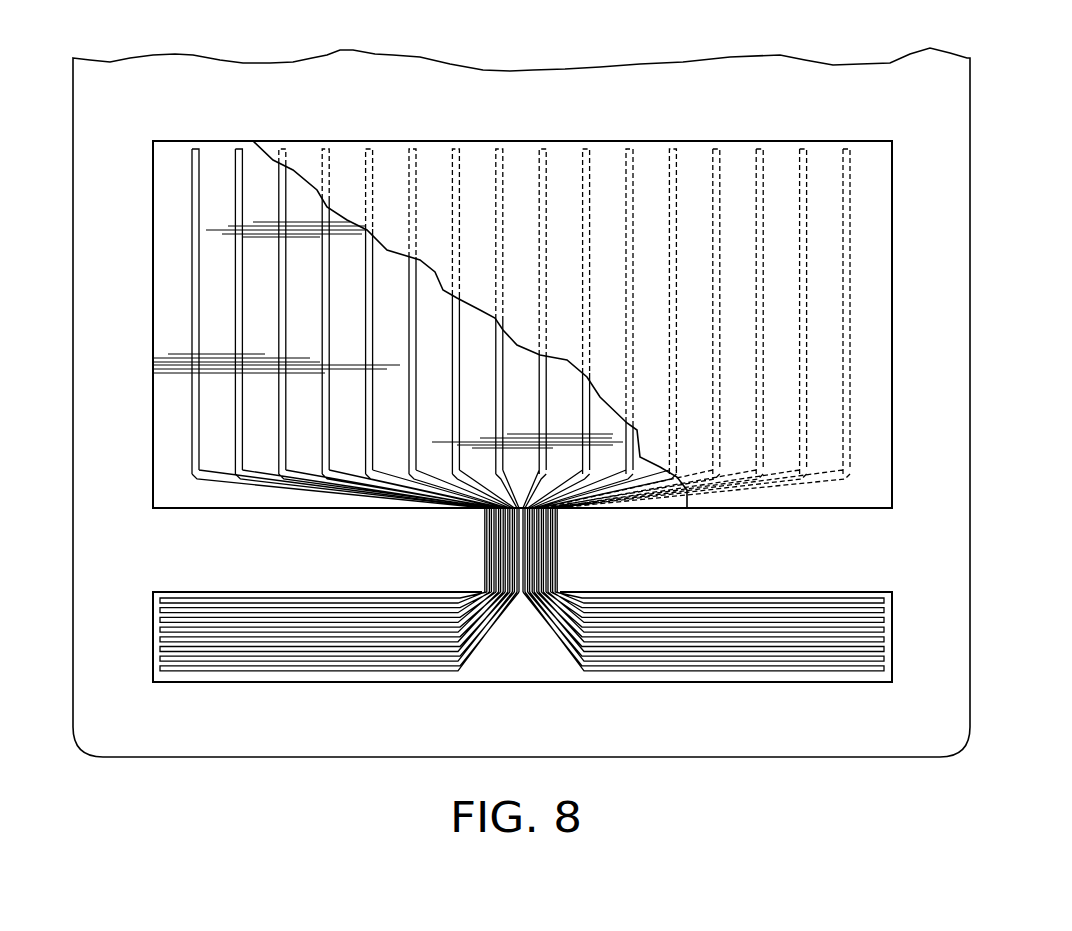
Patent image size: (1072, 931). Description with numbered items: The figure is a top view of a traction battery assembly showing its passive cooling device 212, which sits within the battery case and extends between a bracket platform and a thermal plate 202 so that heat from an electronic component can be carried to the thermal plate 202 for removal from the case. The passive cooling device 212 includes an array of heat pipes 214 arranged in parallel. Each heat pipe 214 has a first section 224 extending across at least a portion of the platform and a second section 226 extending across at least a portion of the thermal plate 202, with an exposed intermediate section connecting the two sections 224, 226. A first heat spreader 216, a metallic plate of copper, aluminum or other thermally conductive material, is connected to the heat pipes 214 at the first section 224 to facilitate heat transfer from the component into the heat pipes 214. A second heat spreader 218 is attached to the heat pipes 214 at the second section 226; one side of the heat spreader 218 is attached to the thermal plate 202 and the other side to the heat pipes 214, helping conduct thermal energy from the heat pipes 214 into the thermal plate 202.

The thermal plate 202 is at (972, 290).
The passive cooling device 212 is at (840, 535).
The heat pipes 214 is at (197, 418).
The first heat spreader 216 is at (882, 417).
The second heat spreader 218 is at (522, 662).
The first section 224 is at (177, 263).
The second section 226 is at (230, 597).